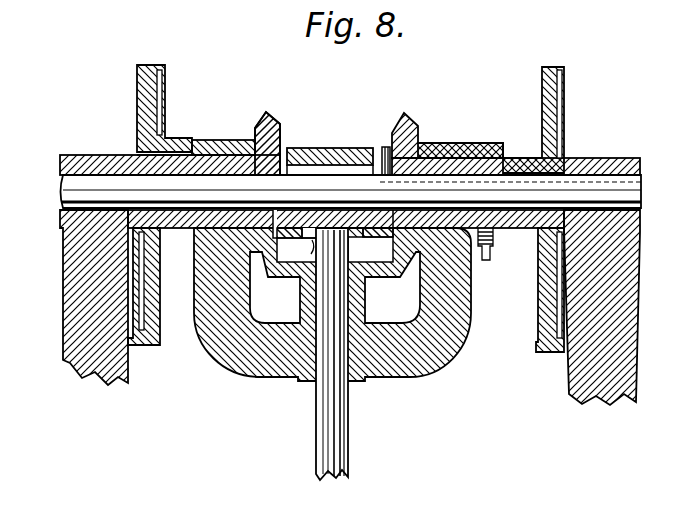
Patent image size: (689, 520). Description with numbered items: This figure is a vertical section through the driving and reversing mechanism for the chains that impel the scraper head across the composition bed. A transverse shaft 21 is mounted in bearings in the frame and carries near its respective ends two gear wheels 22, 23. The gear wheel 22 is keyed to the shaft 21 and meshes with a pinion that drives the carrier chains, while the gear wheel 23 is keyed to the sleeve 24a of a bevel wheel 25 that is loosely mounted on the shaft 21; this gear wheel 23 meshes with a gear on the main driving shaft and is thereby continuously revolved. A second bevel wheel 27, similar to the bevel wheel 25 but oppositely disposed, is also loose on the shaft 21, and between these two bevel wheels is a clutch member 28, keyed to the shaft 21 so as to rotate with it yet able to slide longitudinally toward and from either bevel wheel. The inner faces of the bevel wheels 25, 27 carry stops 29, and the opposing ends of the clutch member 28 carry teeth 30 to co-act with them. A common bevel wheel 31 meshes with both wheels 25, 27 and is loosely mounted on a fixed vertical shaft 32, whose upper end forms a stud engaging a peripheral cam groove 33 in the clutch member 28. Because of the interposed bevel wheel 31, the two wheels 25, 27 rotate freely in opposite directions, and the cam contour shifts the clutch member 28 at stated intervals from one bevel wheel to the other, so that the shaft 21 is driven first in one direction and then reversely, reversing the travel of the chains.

The transverse shaft 21 is at (60, 183).
The gear wheel 22 is at (566, 95).
The gear wheel 23 is at (137, 92).
The sleeve 24a is at (203, 162).
The bevel wheel 25 is at (268, 125).
The bevel wheel 27 is at (403, 114).
The clutch member 28 is at (325, 150).
The stops 29 is at (383, 148).
The teeth 30 is at (378, 246).
The common bevel wheel 31 is at (283, 270).
The fixed vertical shaft 32 is at (350, 414).
The peripheral cam groove 33 is at (335, 243).